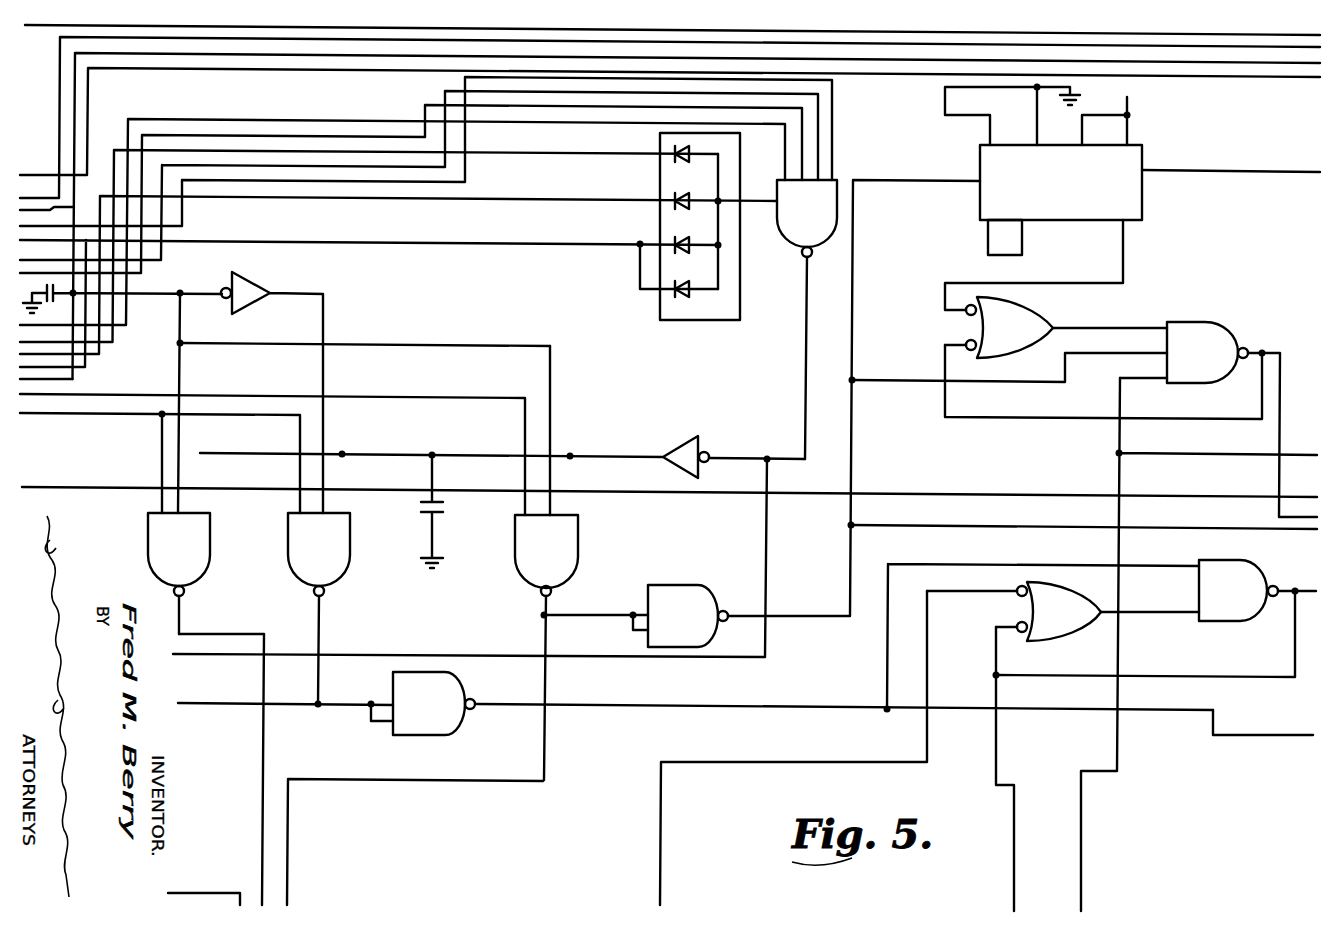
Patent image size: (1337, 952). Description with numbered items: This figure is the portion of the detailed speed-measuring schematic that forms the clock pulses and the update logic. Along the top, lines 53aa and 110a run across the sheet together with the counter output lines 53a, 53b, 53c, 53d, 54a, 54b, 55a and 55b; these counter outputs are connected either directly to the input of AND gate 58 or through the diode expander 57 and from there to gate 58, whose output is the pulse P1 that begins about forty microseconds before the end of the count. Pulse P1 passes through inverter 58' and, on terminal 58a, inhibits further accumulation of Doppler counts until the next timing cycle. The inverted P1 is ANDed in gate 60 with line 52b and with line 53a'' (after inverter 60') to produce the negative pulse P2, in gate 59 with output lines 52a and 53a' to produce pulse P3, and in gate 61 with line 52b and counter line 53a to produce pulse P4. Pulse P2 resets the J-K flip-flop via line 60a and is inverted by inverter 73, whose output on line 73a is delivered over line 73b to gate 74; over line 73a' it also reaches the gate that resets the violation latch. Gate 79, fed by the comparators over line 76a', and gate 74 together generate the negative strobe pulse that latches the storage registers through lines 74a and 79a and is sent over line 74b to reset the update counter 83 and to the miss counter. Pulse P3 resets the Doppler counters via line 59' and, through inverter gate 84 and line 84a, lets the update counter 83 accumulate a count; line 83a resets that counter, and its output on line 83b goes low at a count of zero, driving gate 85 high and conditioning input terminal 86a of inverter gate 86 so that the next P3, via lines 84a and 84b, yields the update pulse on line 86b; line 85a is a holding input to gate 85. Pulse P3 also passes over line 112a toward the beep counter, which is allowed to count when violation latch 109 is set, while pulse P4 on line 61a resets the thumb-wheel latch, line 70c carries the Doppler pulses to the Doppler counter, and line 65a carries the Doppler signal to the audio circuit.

The bus line 53aa is at (57, 26).
The output of counter 54 54a is at (54, 198).
The output of counter 53 53c is at (73, 206).
The line 110a is at (36, 175).
The output of counter 55 55b is at (186, 215).
The output of counter 55 55a is at (67, 258).
The output of counter 54 54b is at (47, 272).
The output of counter 53 53d is at (113, 337).
The output of counter 53 53b is at (87, 363).
The counter output line 53a is at (121, 384).
The line 52b is at (43, 416).
The output line 52a is at (253, 395).
The inverter 60' is at (272, 385).
The line 53a'' is at (364, 355).
The line 53a' is at (579, 430).
The diode expander 57 is at (655, 168).
The AND gate 58 is at (807, 218).
The pulse P1 is at (800, 285).
The inverter 58' is at (502, 445).
The terminal 58a is at (768, 462).
The line 65a is at (115, 486).
The AND gate 61 is at (192, 553).
The AND gate 60 is at (319, 608).
The AND gate 59 is at (546, 647).
The pulse P4 is at (219, 583).
The pulse P2 is at (362, 580).
The pulse P3 is at (598, 576).
The inverter gate 84 is at (688, 628).
The line 84a is at (856, 292).
The line 84b is at (1030, 382).
The update counter 83 is at (1062, 190).
The line 83a is at (1221, 170).
The line 83b is at (1127, 250).
The gate 85 is at (1022, 337).
The line 85a is at (958, 345).
The inverter gate 86 is at (1206, 365).
The input terminal 86a is at (1136, 328).
The line 86b is at (1288, 383).
The violation latch 109 is at (1081, 835).
The line 112a is at (1278, 530).
The line 73b is at (973, 565).
The gate 74 is at (1243, 601).
The line 74b is at (1306, 591).
The latching line 74a is at (1217, 677).
The signal line 73a is at (845, 698).
The line 73a' is at (1263, 722).
The gate 79 is at (1071, 619).
The latching line 79a is at (1016, 870).
The line 76a' is at (793, 748).
The inverter 73 is at (437, 709).
The line 60a is at (240, 704).
The line 59' is at (415, 828).
The line 61a is at (262, 803).
The line 70c is at (239, 893).